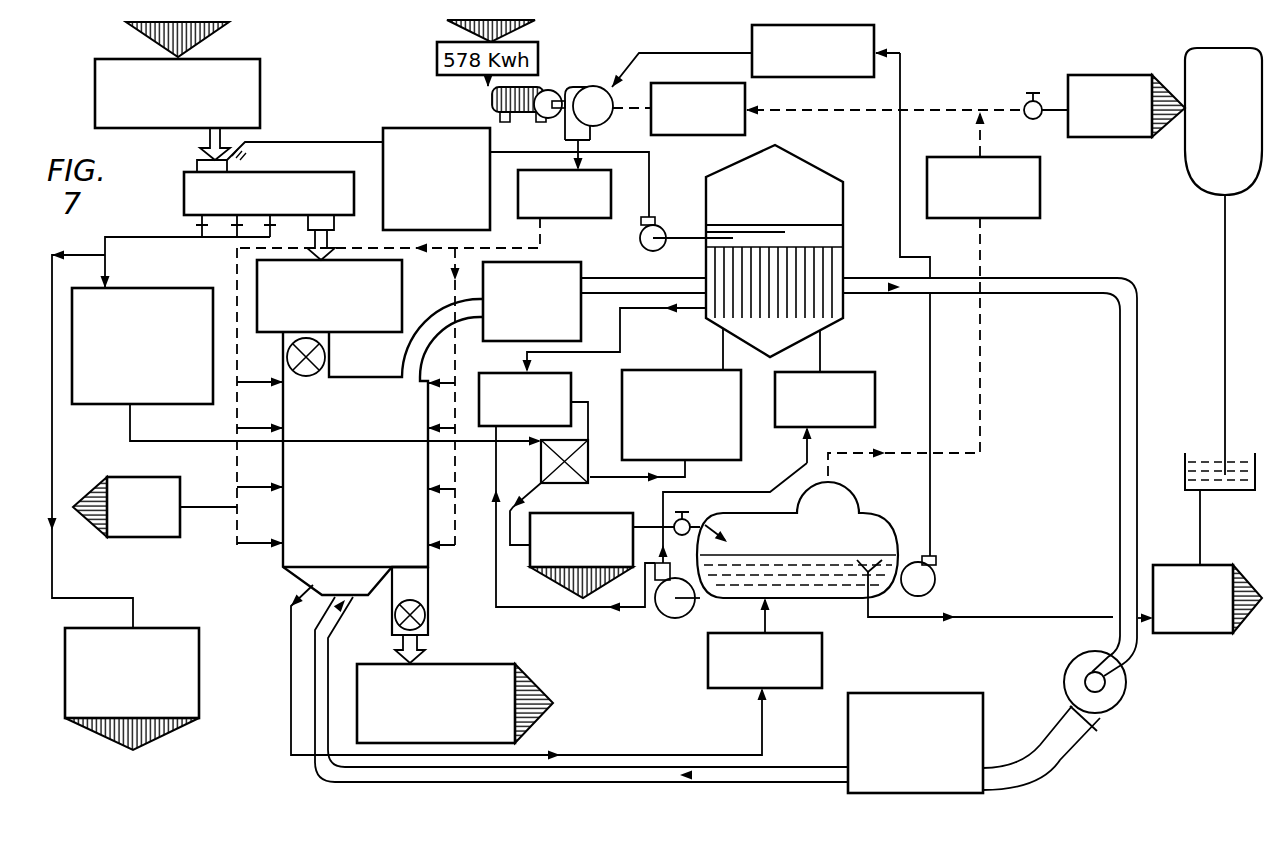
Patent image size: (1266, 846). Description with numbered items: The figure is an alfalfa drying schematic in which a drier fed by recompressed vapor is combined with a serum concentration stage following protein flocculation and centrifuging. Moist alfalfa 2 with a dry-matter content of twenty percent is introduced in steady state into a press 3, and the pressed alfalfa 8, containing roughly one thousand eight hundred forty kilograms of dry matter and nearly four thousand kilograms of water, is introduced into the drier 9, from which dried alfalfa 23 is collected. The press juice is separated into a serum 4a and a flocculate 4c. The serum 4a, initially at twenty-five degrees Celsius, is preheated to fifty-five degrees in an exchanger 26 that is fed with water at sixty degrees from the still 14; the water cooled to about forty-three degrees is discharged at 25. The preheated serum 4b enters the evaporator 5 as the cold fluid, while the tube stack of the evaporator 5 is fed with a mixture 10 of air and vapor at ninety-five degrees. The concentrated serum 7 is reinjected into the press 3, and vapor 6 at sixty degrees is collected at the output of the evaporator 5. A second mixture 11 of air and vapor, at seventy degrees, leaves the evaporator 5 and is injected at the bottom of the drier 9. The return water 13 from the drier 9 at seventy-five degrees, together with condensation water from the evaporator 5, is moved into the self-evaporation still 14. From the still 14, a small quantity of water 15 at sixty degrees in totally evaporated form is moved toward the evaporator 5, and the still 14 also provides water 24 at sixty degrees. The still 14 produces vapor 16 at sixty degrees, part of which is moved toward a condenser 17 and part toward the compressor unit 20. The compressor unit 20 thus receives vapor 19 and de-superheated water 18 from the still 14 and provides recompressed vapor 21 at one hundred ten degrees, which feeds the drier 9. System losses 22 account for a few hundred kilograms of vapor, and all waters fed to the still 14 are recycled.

The moist alfalfa 2 is at (262, 104).
The press 3 is at (184, 198).
The serum 4a is at (191, 288).
The preheated serum 4b is at (685, 370).
The flocculate 4c is at (199, 683).
The evaporator 5 is at (845, 237).
The vapor 6 is at (815, 178).
The concentrated serum 7 is at (407, 128).
The pressed alfalfa 8 is at (402, 298).
The drier 9 is at (283, 465).
The mixture of air and vapor 10 is at (567, 262).
The mixture of air and vapor 11 is at (895, 693).
The return water 13 is at (708, 665).
The self-evaporation still 14 is at (867, 527).
The water 15 is at (848, 372).
The vapor 16 is at (1040, 192).
The condenser 17 is at (1185, 72).
The de-superheated water 18 is at (876, 35).
The vapor 19 is at (718, 83).
The compressor unit 20 is at (535, 85).
The vapor 21 is at (611, 200).
The system losses 22 is at (153, 477).
The dried alfalfa 23 is at (470, 664).
The water 24 is at (1197, 565).
The discharge 25 is at (611, 513).
The exchanger 26 is at (541, 462).